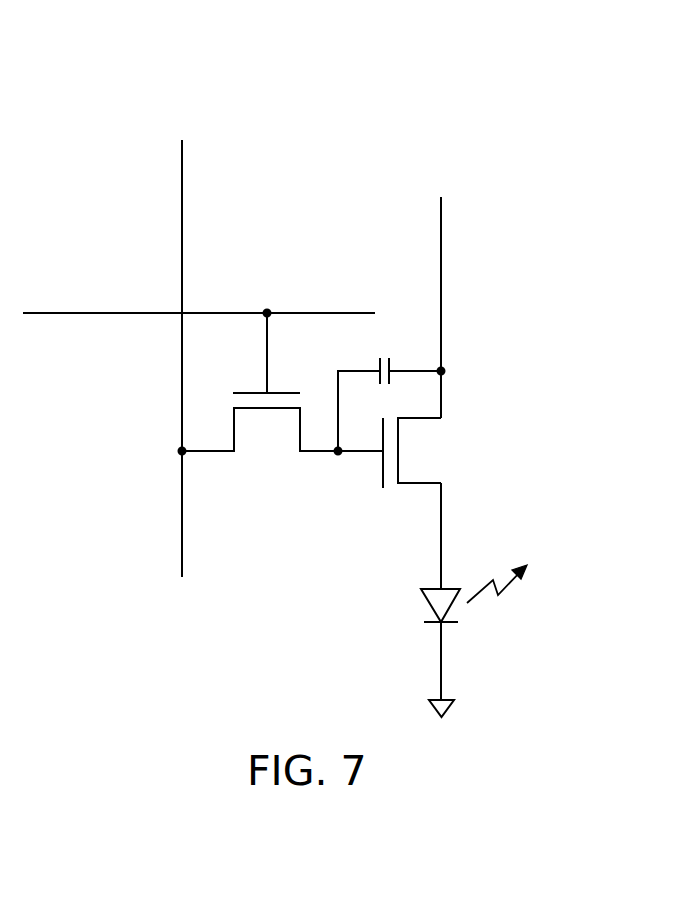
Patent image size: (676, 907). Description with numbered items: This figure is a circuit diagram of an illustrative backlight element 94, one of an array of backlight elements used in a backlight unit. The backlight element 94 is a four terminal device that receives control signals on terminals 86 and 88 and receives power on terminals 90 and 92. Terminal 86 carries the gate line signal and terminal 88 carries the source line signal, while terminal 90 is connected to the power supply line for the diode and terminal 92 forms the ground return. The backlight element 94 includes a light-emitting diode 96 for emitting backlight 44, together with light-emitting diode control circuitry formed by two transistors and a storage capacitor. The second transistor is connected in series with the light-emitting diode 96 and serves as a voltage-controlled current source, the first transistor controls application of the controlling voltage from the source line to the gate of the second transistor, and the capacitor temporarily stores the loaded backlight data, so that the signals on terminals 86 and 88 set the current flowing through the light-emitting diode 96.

The backlight element 94 is at (518, 64).
The terminal 88 is at (182, 200).
The terminal 86 is at (78, 313).
The terminal 90 is at (441, 255).
The light-emitting diode 96 is at (424, 598).
The backlight 44 is at (488, 583).
The terminal 92 is at (447, 710).